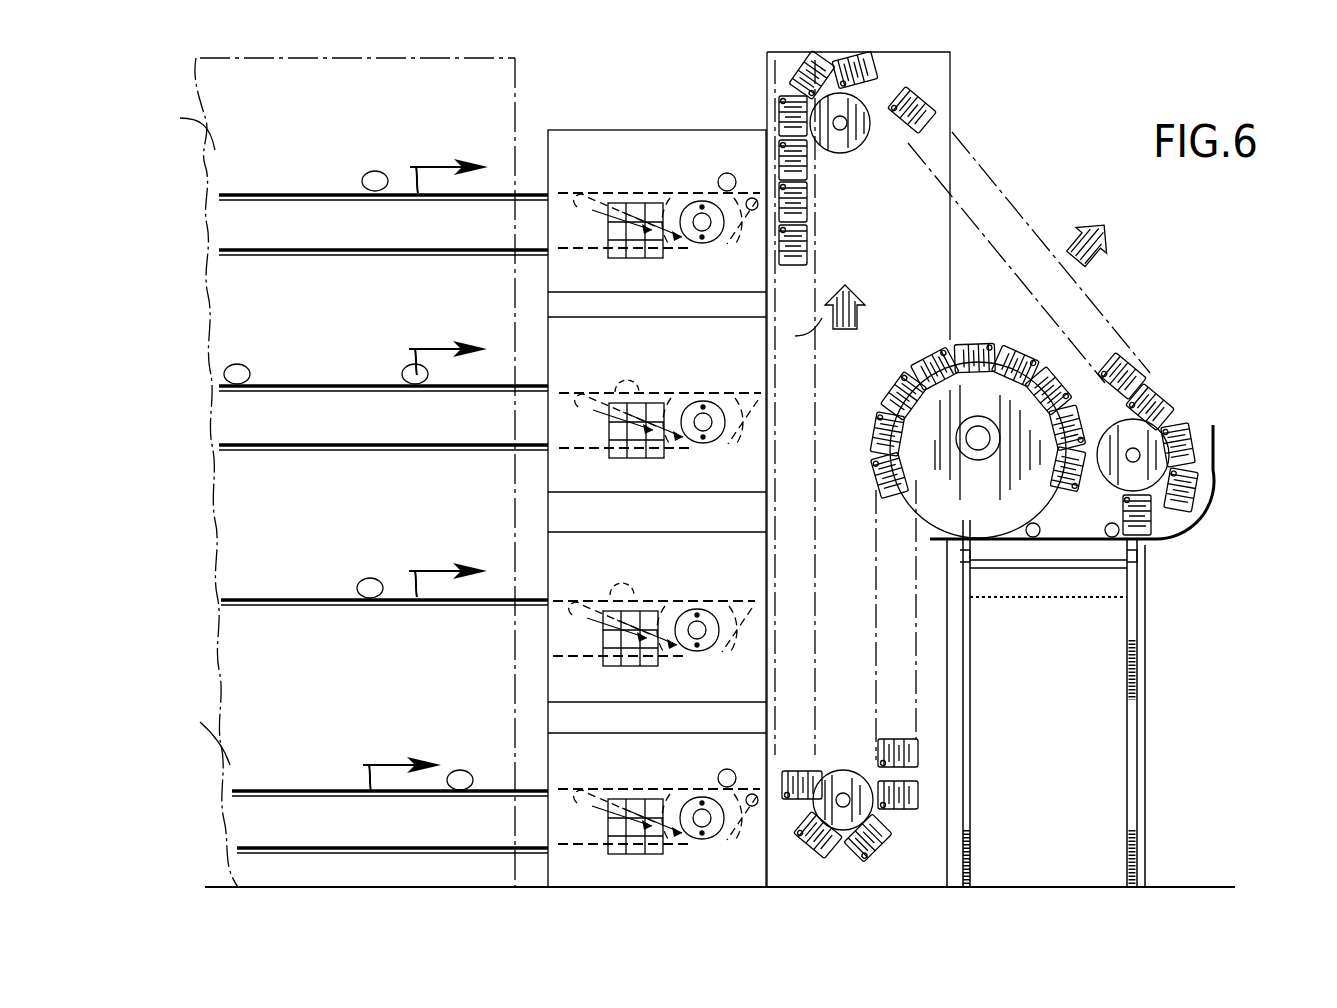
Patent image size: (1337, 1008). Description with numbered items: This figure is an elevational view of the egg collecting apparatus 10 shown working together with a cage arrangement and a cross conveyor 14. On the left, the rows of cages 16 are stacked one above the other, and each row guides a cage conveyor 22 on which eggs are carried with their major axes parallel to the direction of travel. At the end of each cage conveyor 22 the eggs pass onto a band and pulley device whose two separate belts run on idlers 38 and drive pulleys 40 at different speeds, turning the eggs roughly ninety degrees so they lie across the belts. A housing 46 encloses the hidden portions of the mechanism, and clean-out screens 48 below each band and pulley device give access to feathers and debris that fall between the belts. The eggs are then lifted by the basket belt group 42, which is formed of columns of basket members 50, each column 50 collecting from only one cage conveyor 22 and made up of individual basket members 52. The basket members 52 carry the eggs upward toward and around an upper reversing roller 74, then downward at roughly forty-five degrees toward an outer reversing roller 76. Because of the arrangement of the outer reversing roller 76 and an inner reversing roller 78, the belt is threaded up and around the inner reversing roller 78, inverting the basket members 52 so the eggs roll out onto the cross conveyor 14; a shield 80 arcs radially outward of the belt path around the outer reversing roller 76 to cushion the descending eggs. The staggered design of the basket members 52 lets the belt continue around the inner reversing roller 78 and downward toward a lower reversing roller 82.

The apparatus 10 is at (726, 115).
The cross conveyor 14 is at (1062, 566).
The rows of cages 16 is at (331, 472).
The cage conveyor 22 is at (285, 838).
The idlers 38 is at (588, 790).
The drive pulleys 40 is at (709, 840).
The basket belt group 42 is at (974, 124).
The housing 46 is at (588, 131).
The clean-out screens 48 is at (630, 662).
The column of basket members 50 is at (990, 178).
The basket member 52 is at (1157, 387).
The upper reversing roller 74 is at (862, 150).
The outer reversing roller 76 is at (1163, 517).
The inner reversing roller 78 is at (976, 460).
The shield 80 is at (1217, 450).
The lower reversing roller 82 is at (843, 770).